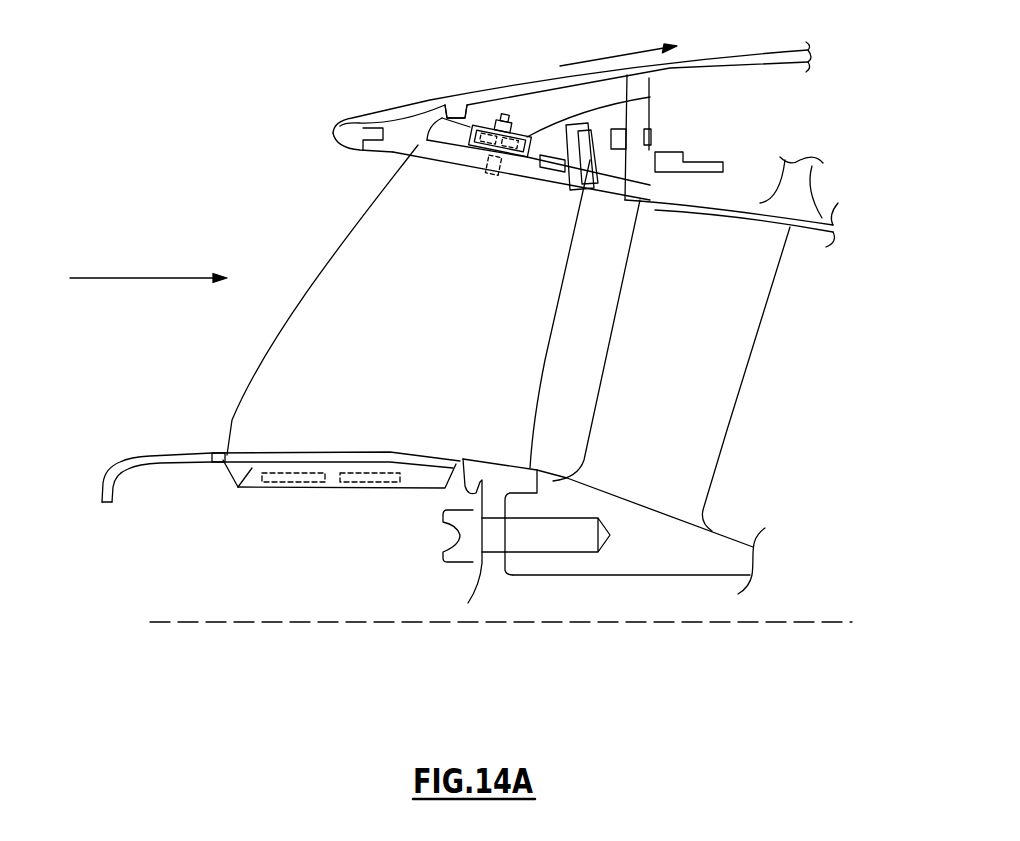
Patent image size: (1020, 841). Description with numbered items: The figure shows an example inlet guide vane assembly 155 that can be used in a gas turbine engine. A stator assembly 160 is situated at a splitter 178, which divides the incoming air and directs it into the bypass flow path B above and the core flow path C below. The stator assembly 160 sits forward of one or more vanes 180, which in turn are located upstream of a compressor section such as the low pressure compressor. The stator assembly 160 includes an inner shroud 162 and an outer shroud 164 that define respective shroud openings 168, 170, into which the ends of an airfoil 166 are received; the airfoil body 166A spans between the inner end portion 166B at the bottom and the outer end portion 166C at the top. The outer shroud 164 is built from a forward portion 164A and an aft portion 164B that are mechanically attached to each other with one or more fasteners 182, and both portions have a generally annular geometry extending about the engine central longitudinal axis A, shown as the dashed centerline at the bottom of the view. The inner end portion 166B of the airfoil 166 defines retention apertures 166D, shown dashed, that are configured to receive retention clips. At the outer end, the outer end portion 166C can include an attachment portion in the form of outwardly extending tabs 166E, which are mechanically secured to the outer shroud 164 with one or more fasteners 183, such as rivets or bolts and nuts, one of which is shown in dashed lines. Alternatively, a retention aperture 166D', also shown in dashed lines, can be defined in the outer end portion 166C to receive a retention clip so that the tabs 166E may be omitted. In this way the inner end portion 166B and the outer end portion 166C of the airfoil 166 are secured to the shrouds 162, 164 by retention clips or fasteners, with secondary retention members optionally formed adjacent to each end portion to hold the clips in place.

The inlet guide vane assembly 155 is at (218, 108).
The splitter 178 is at (388, 112).
The outer end portion 166C is at (453, 130).
The outer shroud 164 is at (385, 159).
The forward portion 164A is at (448, 136).
The aft portion 164B is at (612, 187).
The shroud opening 170 is at (423, 148).
The stator assembly 160 is at (512, 106).
The fastener 183 is at (505, 155).
The retention aperture 166D' is at (548, 176).
The tabs 166E is at (628, 106).
The fastener 182 is at (645, 151).
The airfoil 166 is at (334, 236).
The airfoil body 166A is at (456, 317).
The vane 180 is at (737, 403).
The inner shroud 162 is at (240, 452).
The shroud opening 168 is at (225, 464).
The inner end portion 166B is at (241, 488).
The retention aperture 166D is at (322, 507).
The engine central longitudinal axis A is at (815, 621).
The bypass flow path B is at (607, 57).
The core flow path C is at (130, 278).